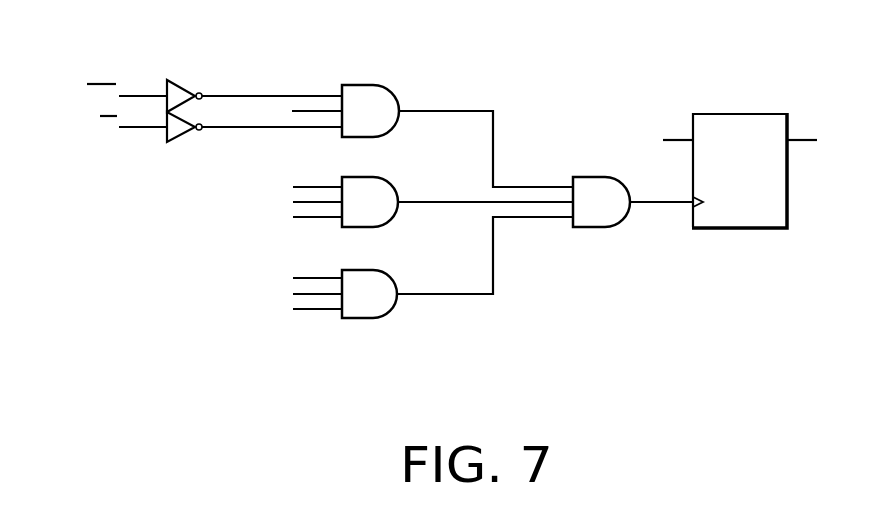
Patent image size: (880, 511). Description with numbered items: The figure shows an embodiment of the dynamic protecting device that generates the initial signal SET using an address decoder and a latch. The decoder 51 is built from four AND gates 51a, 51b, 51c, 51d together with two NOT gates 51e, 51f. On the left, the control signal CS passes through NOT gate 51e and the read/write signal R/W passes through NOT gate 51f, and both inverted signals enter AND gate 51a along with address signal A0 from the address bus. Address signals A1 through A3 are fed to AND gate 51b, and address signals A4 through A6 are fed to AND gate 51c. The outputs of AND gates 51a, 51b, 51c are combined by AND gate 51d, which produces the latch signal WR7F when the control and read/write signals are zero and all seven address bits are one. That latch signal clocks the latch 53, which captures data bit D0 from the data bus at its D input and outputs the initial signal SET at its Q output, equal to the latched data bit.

The decoder 51 is at (374, 388).
The AND gate 51a is at (387, 63).
The AND gate 51b is at (420, 167).
The AND gate 51c is at (420, 258).
The AND gate 51d is at (583, 177).
The NOT gate 51e is at (195, 65).
The NOT gate 51f is at (182, 142).
The latch 53 is at (764, 305).